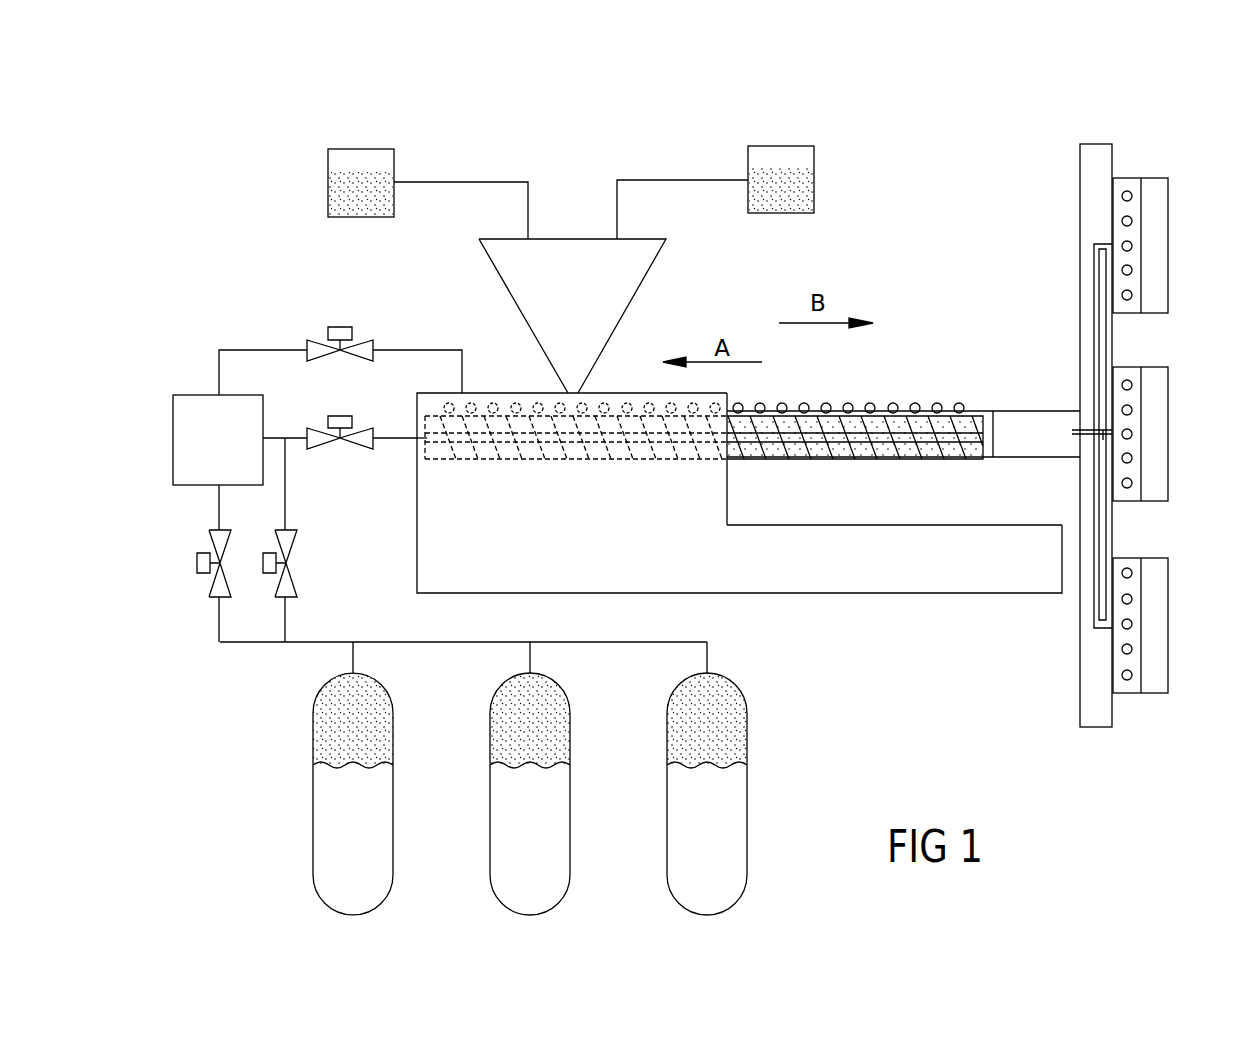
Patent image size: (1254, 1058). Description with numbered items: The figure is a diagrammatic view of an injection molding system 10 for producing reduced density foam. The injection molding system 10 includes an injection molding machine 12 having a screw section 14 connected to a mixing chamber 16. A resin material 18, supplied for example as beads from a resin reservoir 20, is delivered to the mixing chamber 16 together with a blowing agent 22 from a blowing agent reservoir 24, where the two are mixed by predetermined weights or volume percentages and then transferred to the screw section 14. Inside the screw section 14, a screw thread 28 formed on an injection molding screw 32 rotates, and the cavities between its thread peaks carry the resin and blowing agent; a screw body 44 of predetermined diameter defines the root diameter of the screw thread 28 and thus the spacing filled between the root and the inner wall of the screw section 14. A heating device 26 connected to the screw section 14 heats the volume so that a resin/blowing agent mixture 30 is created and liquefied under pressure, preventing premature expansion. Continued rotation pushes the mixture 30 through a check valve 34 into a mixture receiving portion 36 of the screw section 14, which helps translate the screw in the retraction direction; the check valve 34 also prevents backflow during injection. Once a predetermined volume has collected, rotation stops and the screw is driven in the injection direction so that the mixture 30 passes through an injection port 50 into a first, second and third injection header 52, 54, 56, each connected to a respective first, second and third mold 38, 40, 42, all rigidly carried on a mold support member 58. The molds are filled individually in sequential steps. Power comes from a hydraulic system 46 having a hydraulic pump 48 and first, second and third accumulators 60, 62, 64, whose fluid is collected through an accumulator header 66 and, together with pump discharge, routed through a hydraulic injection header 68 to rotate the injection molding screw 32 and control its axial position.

The injection molding system 10 is at (956, 151).
The injection molding machine 12 is at (688, 573).
The screw section 14 is at (968, 408).
The mixing chamber 16 is at (619, 298).
The resin material 18 is at (377, 203).
The resin reservoir 20 is at (370, 149).
The blowing agent 22 is at (800, 187).
The blowing agent reservoir 24 is at (778, 146).
The heating device 26 is at (848, 406).
The screw thread 28 is at (900, 405).
The resin/blowing agent mixture 30 is at (857, 455).
The injection molding screw 32 is at (985, 460).
The check valve 34 is at (985, 470).
The mixture receiving portion 36 is at (1033, 447).
The first mold 38 is at (1153, 620).
The second mold 40 is at (1152, 423).
The third mold 42 is at (1150, 240).
The screw body 44 is at (917, 447).
The hydraulic system 46 is at (148, 364).
The hydraulic pump 48 is at (182, 473).
The injection port 50 is at (1072, 432).
The first injection header 52 is at (1097, 533).
The second injection header 54 is at (1103, 437).
The third injection header 56 is at (1097, 336).
The mold support member 58 is at (1088, 236).
The first accumulator 60 is at (748, 735).
The second accumulator 62 is at (571, 742).
The third accumulator 64 is at (394, 732).
The accumulator header 66 is at (418, 642).
The hydraulic injection header 68 is at (402, 438).